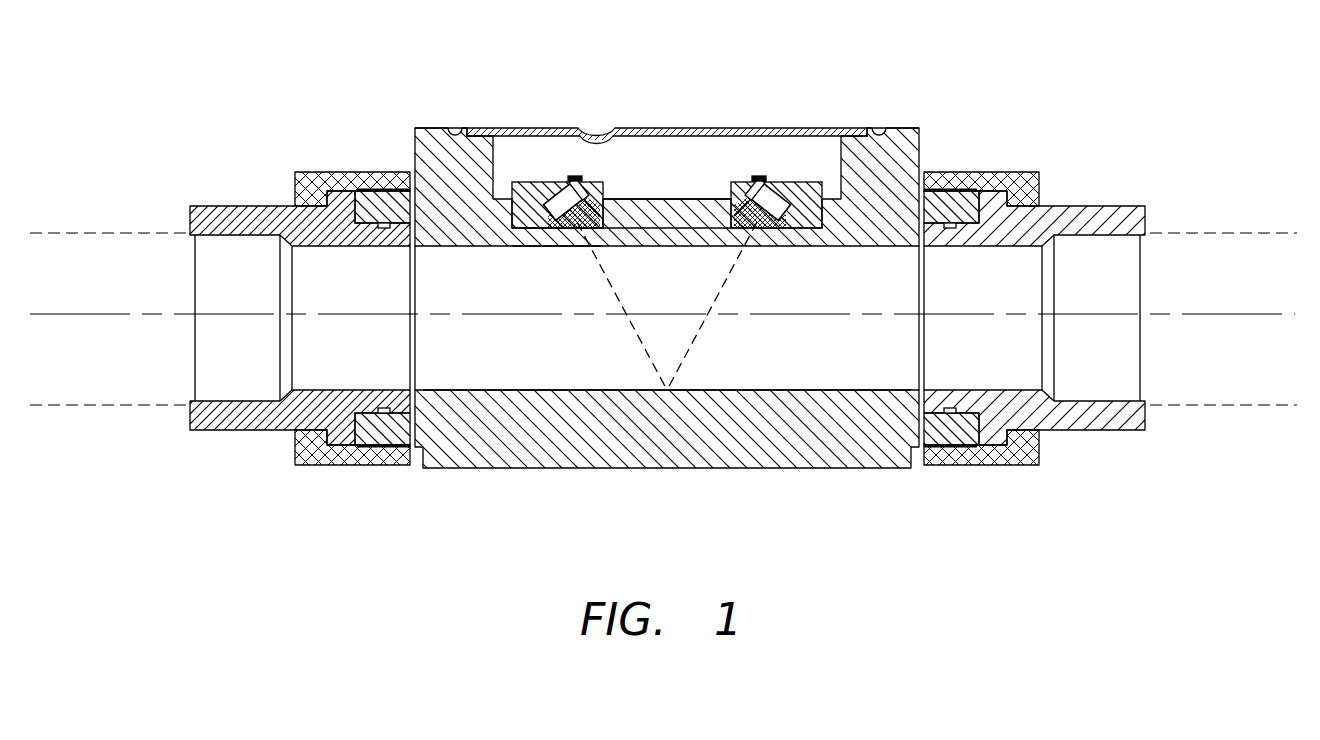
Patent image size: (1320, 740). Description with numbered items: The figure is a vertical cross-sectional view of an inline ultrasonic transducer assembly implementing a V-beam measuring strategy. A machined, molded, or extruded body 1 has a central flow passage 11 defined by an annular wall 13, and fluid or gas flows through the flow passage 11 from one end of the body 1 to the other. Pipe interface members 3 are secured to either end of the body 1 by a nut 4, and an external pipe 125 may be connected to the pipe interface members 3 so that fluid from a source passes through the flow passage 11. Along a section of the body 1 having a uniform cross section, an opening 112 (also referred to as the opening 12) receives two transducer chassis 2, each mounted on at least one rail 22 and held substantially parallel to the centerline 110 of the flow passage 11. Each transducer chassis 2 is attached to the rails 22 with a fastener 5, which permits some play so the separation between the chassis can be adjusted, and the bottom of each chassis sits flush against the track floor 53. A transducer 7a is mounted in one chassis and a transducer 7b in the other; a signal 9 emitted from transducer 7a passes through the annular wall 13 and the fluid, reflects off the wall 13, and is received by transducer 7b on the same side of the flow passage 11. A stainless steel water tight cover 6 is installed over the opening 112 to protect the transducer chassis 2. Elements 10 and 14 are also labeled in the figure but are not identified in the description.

The body 1 is at (535, 468).
The transducer chassis 2 is at (735, 182).
The pipe interface member 3 is at (221, 206).
The nut 4 is at (325, 172).
The fastener 5 is at (573, 176).
The cover 6 is at (490, 128).
The transducer 7a is at (545, 182).
The transducer 7b is at (797, 182).
The signal 9 is at (634, 322).
The locking pin 10 is at (383, 415).
The flow passage 11 is at (843, 352).
The opening 12 is at (702, 333).
The annular wall 13 is at (562, 247).
The inner wall 14 is at (630, 390).
The rail 22 is at (693, 200).
The track floor 53 is at (637, 229).
The centerline 110 is at (1230, 314).
The opening 112 is at (803, 160).
The external pipe 125 is at (120, 233).